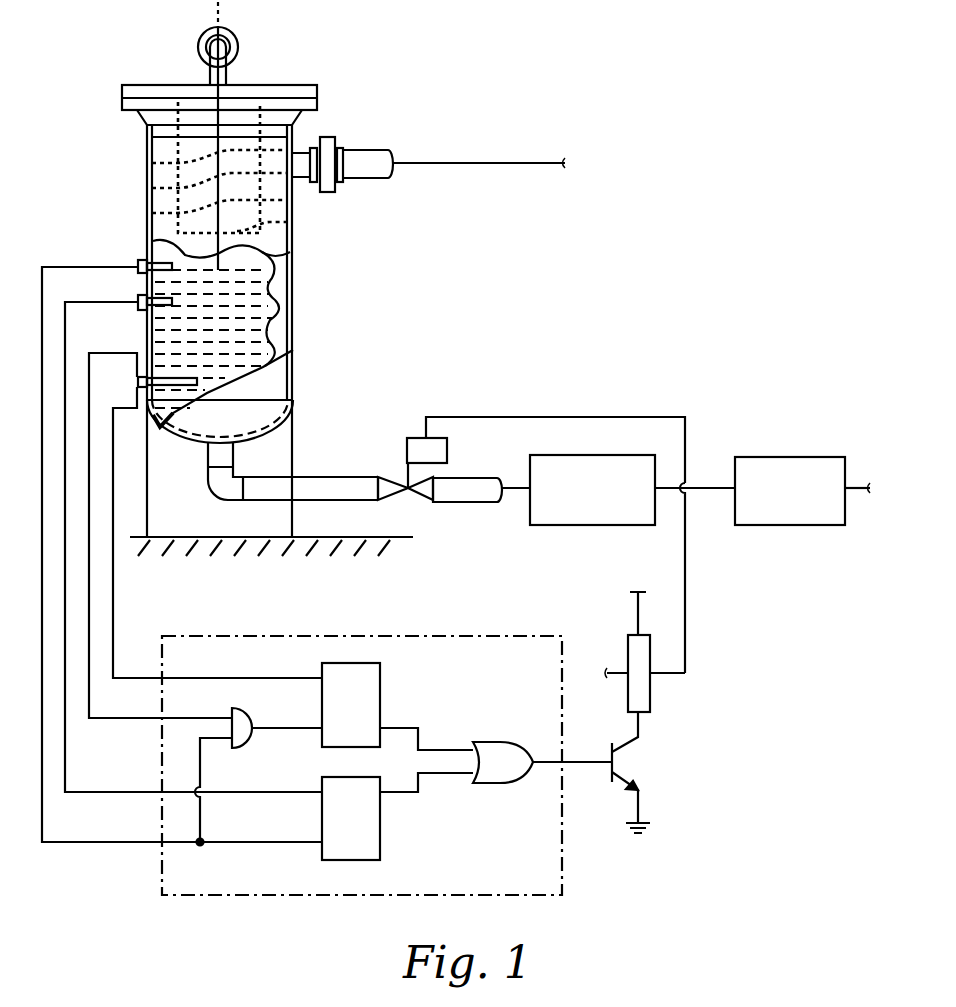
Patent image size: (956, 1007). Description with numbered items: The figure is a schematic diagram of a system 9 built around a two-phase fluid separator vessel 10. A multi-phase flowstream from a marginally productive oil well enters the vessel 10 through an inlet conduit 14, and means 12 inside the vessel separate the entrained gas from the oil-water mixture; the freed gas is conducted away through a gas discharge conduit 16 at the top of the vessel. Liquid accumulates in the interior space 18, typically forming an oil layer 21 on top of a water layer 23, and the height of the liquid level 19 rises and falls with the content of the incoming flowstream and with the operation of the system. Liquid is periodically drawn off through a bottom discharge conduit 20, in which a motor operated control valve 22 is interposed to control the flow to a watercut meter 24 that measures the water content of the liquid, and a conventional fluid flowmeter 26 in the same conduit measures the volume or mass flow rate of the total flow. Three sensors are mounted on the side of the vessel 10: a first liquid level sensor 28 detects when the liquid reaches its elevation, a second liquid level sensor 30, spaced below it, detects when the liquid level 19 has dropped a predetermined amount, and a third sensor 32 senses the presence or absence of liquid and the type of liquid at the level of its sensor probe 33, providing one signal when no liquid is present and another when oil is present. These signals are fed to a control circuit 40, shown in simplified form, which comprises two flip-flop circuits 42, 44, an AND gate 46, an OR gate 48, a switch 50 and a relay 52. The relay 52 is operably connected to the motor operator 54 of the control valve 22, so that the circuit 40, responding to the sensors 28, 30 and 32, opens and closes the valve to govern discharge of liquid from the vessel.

The system 9 is at (563, 245).
The two-phase fluid separator vessel 10 is at (331, 269).
The means for separating gas from liquid 12 is at (197, 160).
The inlet conduit 14 is at (456, 163).
The gas discharge conduit 16 is at (236, 40).
The interior space 18 is at (236, 306).
The liquid level 19 is at (290, 252).
The bottom discharge conduit 20 is at (325, 477).
The oil layer 21 is at (272, 303).
The motor operated control valve 22 is at (423, 503).
The water layer 23 is at (293, 350).
The watercut meter 24 is at (583, 455).
The fluid flowmeter 26 is at (776, 457).
The first liquid level sensor 28 is at (140, 260).
The second liquid level sensor 30 is at (140, 300).
The third sensor 32 is at (136, 353).
The sensor probe 33 is at (137, 387).
The control circuit 40 is at (387, 727).
The flip-flop circuit 42 is at (380, 682).
The flip-flop circuit 44 is at (383, 822).
The AND gate 46 is at (247, 742).
The OR gate 48 is at (490, 741).
The switch 50 is at (612, 777).
The relay 52 is at (650, 693).
The motor operator 54 is at (420, 438).